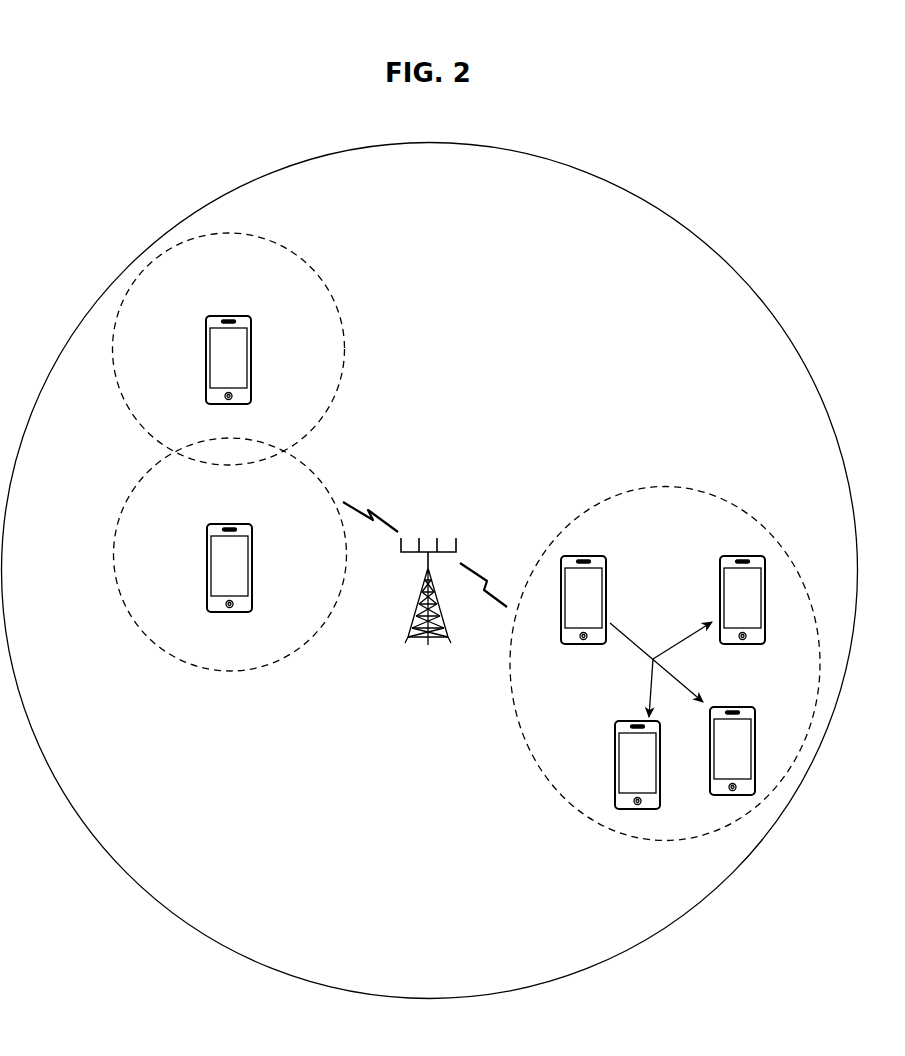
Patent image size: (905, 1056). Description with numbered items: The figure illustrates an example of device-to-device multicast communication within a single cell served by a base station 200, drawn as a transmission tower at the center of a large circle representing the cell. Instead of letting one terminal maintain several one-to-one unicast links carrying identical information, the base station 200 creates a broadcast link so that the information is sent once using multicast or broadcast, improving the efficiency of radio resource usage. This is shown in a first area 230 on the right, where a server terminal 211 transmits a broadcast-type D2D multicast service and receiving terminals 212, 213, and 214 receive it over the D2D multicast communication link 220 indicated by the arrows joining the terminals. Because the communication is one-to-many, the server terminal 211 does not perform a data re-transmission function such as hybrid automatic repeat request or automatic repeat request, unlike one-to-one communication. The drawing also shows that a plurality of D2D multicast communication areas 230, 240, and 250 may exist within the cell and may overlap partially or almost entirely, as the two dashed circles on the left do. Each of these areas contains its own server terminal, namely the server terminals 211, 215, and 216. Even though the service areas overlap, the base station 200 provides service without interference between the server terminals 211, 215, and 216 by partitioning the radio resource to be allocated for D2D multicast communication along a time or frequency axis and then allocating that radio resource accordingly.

The base station 200 is at (428, 645).
The server terminal 211 is at (585, 556).
The receiving terminal 212 is at (743, 556).
The receiving terminal 213 is at (733, 707).
The receiving terminal 214 is at (622, 721).
The server terminal 215 is at (229, 316).
The server terminal 216 is at (229, 524).
The D2D multicast communication link 220 is at (647, 643).
The first area 230 is at (662, 486).
The D2D multicast communication area 240 is at (313, 268).
The D2D multicast communication area 250 is at (229, 672).